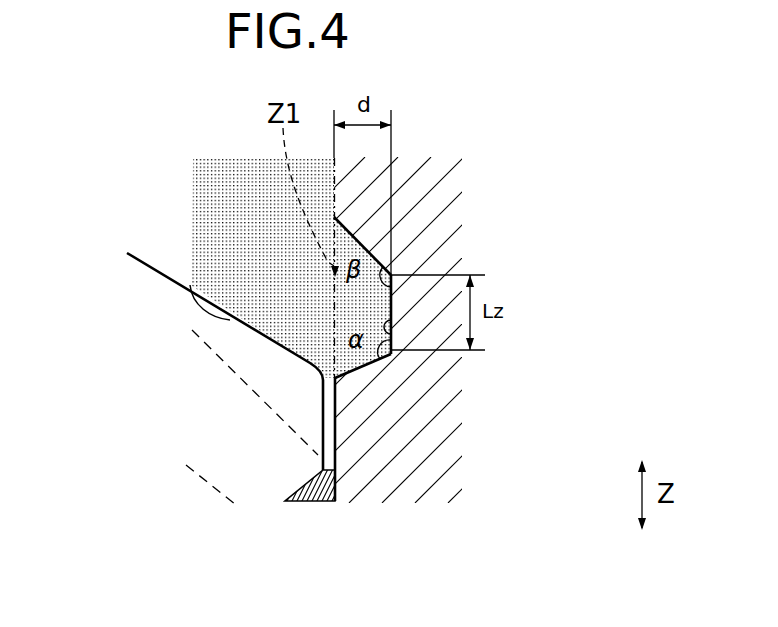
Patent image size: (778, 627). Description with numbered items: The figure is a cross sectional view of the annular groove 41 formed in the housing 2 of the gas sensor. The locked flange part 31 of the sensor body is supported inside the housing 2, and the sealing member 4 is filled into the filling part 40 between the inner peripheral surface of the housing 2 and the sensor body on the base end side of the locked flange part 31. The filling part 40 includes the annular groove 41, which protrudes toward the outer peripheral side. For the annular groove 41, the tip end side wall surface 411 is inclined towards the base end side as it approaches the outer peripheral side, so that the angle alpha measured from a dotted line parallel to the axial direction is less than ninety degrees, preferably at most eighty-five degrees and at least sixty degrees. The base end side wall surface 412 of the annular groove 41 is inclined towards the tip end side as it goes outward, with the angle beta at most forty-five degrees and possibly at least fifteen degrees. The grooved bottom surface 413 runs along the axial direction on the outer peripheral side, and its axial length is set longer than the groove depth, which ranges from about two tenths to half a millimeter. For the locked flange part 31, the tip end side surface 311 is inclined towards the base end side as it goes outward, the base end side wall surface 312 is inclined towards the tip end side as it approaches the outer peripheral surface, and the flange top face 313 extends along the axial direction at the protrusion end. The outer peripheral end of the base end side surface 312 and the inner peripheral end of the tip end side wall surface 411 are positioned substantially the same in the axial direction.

The housing 2 is at (440, 386).
The sealing member 4 is at (338, 331).
The filling part 40 is at (257, 267).
The locked flange part 31 is at (252, 458).
The tip end side surface 311 is at (298, 506).
The base end side wall surface 312 is at (195, 308).
The flange top face 313 is at (330, 438).
The annular groove 41 is at (400, 276).
The tip end side wall surface 411 is at (392, 354).
The base end side wall surface 412 is at (393, 270).
The grooved bottom surface 413 is at (391, 335).